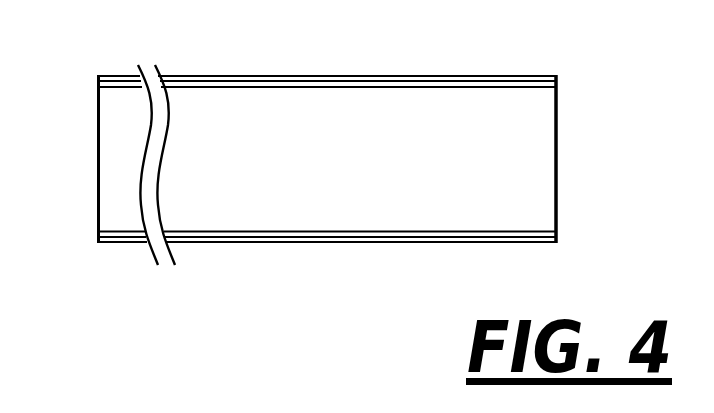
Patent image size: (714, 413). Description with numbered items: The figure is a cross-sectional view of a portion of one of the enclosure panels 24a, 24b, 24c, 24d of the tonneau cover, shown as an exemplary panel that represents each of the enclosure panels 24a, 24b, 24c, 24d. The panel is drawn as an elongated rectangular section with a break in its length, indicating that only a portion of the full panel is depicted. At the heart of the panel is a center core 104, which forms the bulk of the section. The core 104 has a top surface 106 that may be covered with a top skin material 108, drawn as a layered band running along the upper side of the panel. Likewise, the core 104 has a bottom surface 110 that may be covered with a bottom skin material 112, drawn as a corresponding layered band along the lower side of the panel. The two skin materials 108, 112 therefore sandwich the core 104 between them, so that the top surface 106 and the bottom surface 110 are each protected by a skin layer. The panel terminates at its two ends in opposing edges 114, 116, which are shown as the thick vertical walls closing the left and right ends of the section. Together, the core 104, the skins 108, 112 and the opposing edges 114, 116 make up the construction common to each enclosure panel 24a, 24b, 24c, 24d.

The center core 104 is at (455, 122).
The top surface 106 is at (358, 87).
The top skin material 108 is at (283, 76).
The bottom surface 110 is at (303, 232).
The bottom skin material 112 is at (352, 237).
The edge 114 is at (558, 143).
The edge 116 is at (98, 135).
The enclosure panel 24a is at (305, 155).
The enclosure panel 24b is at (305, 155).
The enclosure panel 24c is at (305, 155).
The enclosure panel 24d is at (398, 166).